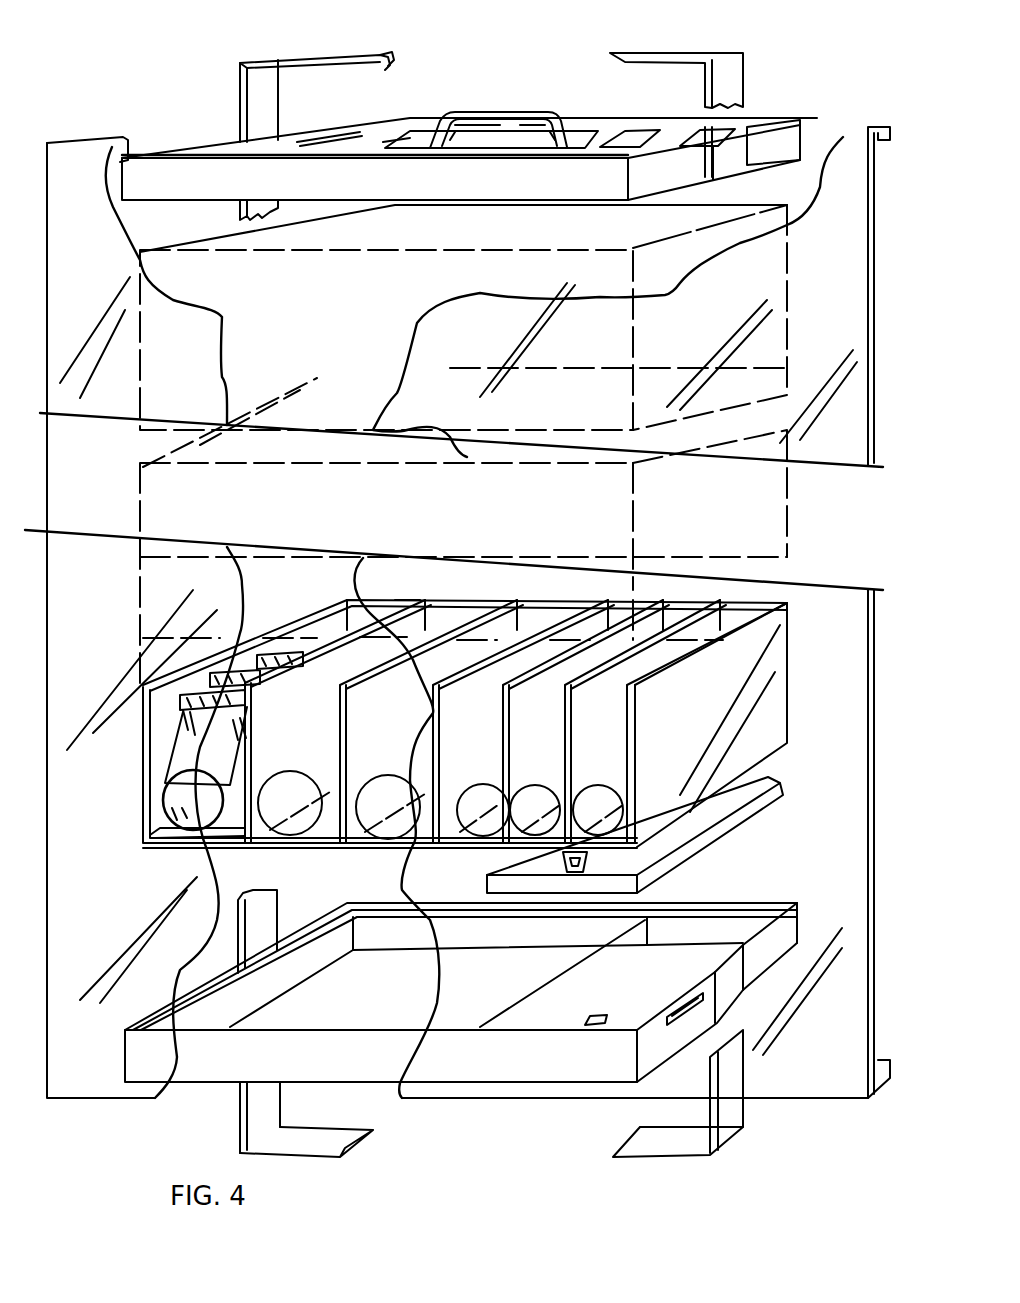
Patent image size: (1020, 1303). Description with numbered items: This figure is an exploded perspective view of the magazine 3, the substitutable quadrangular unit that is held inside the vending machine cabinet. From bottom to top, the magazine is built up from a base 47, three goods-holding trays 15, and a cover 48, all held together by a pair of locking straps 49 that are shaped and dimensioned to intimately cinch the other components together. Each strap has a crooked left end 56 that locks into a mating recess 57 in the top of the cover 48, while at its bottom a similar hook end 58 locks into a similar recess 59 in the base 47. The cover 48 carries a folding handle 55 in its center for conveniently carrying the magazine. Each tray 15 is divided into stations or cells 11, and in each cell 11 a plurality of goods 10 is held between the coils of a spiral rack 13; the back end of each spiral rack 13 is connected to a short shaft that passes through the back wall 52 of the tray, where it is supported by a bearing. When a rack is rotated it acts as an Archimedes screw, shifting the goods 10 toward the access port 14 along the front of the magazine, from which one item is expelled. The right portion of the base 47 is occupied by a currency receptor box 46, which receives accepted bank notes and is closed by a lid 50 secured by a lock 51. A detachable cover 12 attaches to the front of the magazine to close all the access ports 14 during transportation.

The magazine 3 is at (516, 74).
The goods 10 is at (175, 732).
The station or cell 11 is at (783, 603).
The detachable cover 12 is at (843, 147).
The spiral rack 13 is at (160, 788).
The access port 14 is at (165, 848).
The tray 15 is at (782, 325).
The currency receptor box 46 is at (727, 927).
The base 47 is at (800, 920).
The cover 48 is at (808, 118).
The locking strap 49 is at (240, 117).
The lid 50 is at (740, 830).
The lock 51 is at (593, 1027).
The back wall 52 is at (410, 596).
The folding handle 55 is at (540, 112).
The crooked left end 56 is at (388, 62).
The recess 57 is at (352, 138).
The hook end 58 is at (360, 1147).
The recess 59 is at (743, 993).